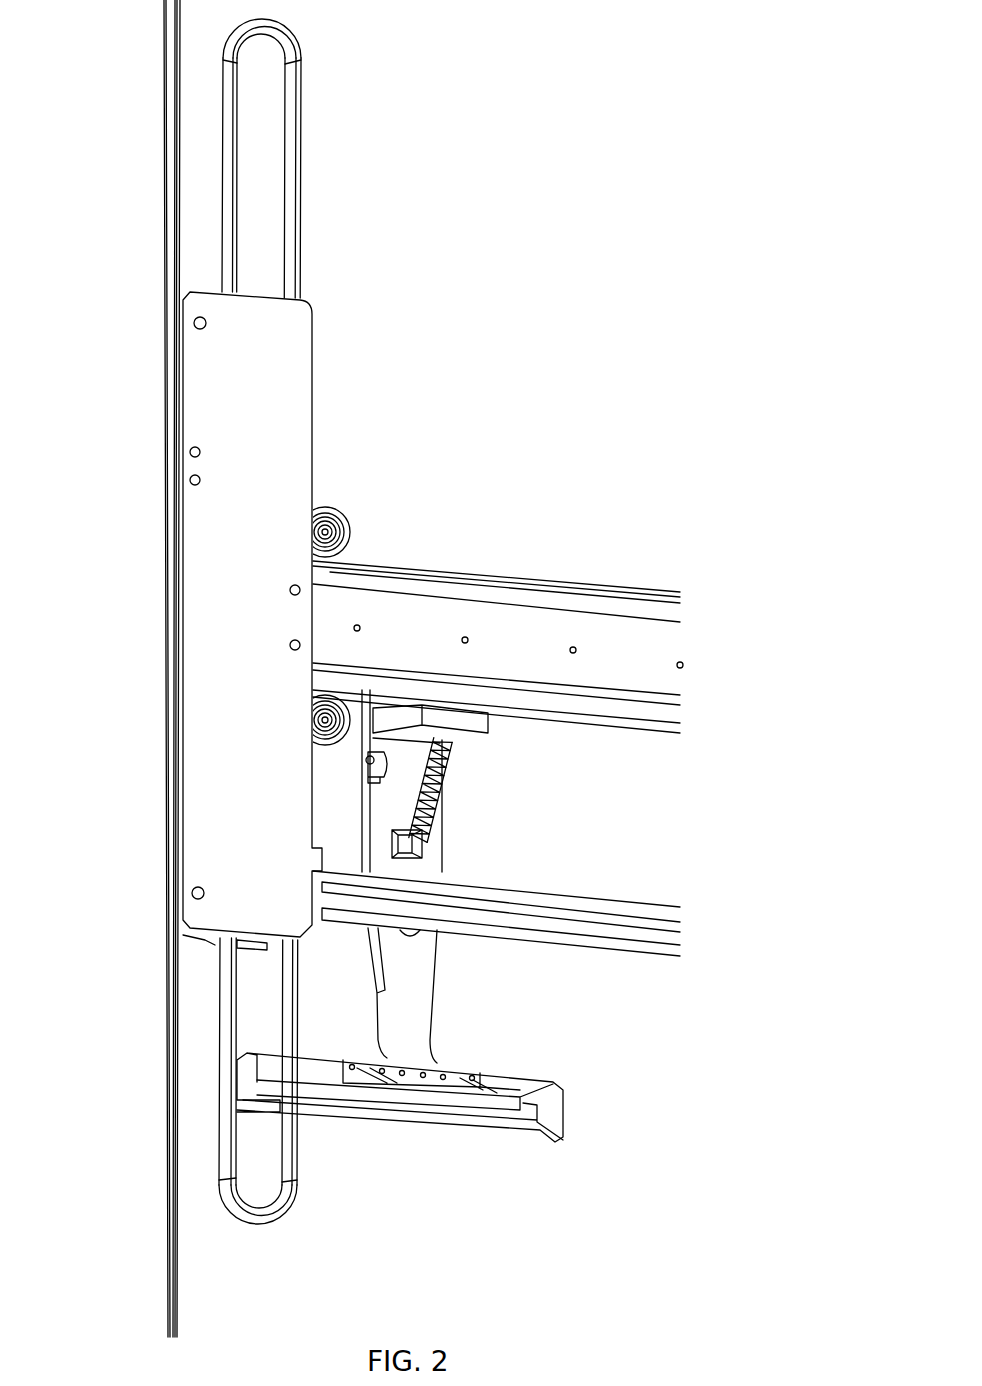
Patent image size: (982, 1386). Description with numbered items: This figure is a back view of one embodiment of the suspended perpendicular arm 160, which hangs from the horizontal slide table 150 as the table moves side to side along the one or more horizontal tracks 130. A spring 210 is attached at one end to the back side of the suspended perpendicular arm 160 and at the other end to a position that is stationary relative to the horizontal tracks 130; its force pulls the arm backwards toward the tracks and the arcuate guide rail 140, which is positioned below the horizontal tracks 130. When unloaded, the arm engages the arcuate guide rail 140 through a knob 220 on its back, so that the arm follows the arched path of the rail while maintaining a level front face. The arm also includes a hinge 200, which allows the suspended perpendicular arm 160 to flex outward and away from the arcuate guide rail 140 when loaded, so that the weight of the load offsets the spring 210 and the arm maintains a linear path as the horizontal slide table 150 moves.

The horizontal tracks 130 is at (632, 648).
The arcuate guide rail 140 is at (665, 933).
The horizontal slide table 150 is at (380, 680).
The suspended perpendicular arm 160 is at (410, 1150).
The hinge 200 is at (367, 770).
The spring 210 is at (437, 795).
The knob 220 is at (415, 935).